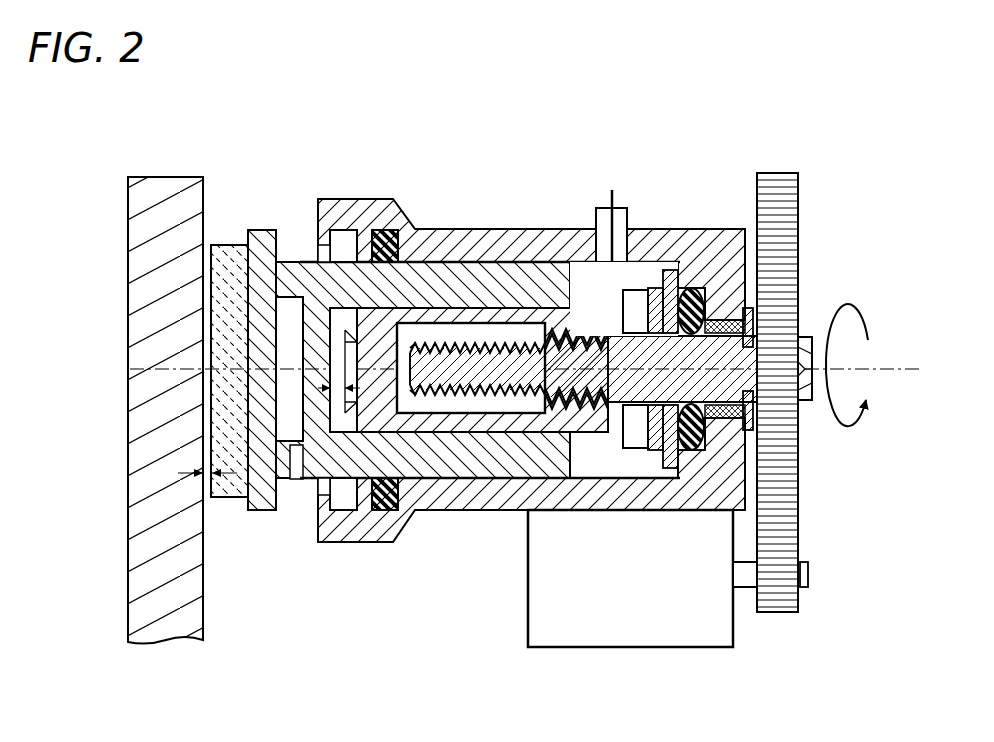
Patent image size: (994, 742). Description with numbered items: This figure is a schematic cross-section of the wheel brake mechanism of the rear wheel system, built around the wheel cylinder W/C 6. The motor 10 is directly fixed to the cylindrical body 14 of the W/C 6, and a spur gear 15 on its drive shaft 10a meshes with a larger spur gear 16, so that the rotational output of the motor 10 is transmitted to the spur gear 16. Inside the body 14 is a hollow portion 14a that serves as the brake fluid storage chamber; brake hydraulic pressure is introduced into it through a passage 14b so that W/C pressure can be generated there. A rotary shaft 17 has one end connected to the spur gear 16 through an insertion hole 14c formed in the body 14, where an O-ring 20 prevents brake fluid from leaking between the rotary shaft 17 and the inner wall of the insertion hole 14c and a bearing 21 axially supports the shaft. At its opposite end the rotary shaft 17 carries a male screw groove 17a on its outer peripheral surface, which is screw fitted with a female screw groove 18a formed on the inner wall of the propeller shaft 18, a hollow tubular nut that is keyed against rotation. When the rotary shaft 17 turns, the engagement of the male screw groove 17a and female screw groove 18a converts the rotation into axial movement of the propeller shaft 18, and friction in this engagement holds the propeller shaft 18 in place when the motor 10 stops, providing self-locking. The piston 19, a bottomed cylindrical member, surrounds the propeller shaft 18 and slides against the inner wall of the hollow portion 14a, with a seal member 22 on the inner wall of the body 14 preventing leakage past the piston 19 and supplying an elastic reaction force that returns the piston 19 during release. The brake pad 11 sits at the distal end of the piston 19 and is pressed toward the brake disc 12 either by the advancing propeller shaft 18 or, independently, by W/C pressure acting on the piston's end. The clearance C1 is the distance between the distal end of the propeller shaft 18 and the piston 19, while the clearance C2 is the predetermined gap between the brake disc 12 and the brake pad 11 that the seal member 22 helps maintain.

The W/C 6 is at (499, 209).
The motor 10 is at (600, 648).
The drive shaft 10a is at (745, 578).
The brake pad 11 is at (238, 497).
The brake disc 12 is at (127, 485).
The body 14 is at (537, 229).
The hollow portion 14a is at (585, 272).
The passage 14b is at (617, 248).
The insertion hole 14c is at (752, 318).
The spur gear 15 is at (806, 598).
The spur gear 16 is at (796, 212).
The rotary shaft 17 is at (752, 352).
The male screw groove 17a is at (530, 395).
The propeller shaft 18 is at (457, 425).
The female screw groove 18a is at (572, 405).
The piston 19 is at (422, 463).
The O-ring 20 is at (693, 440).
The bearing 21 is at (714, 468).
The seal member 22 is at (387, 508).
The clearance C1 is at (335, 390).
The clearance C2 is at (207, 477).